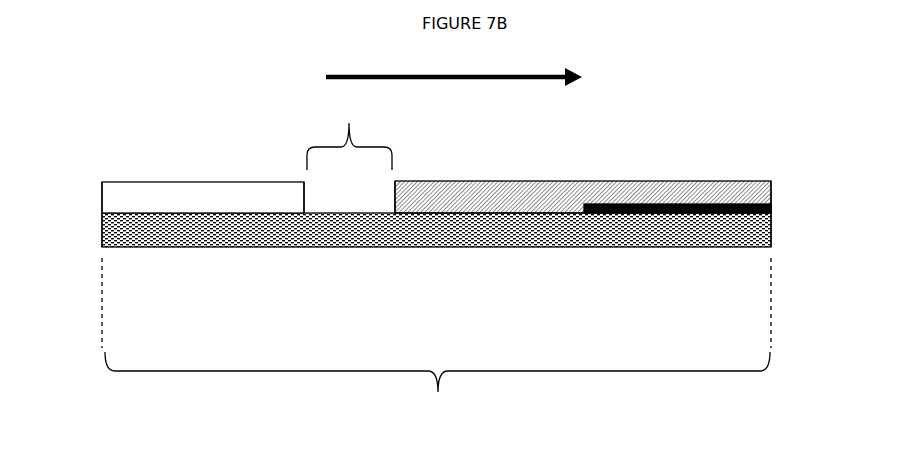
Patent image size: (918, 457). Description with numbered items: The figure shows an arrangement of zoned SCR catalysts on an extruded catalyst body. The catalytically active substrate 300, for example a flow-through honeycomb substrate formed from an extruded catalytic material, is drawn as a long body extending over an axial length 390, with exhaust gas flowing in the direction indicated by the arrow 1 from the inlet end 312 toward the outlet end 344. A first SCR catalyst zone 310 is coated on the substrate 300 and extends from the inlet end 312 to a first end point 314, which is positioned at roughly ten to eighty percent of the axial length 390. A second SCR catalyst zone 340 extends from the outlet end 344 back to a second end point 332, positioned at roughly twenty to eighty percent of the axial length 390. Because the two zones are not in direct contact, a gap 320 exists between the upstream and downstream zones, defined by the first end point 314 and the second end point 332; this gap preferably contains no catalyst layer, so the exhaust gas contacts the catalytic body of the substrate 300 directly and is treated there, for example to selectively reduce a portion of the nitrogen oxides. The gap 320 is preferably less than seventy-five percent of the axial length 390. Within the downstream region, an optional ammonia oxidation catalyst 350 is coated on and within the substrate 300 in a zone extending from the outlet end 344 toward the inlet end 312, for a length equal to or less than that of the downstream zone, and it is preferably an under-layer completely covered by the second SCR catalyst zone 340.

The direction arrow 1 is at (368, 73).
The catalytically active substrate 300 is at (195, 228).
The first SCR catalyst zone 310 is at (230, 199).
The inlet end 312 is at (102, 230).
The first end point 314 is at (304, 205).
The gap 320 is at (349, 138).
The second end point 332 is at (395, 200).
The second layer 340 is at (590, 181).
The outlet end 344 is at (771, 231).
The conductive strip 350 is at (736, 208).
The axial length 390 is at (436, 343).